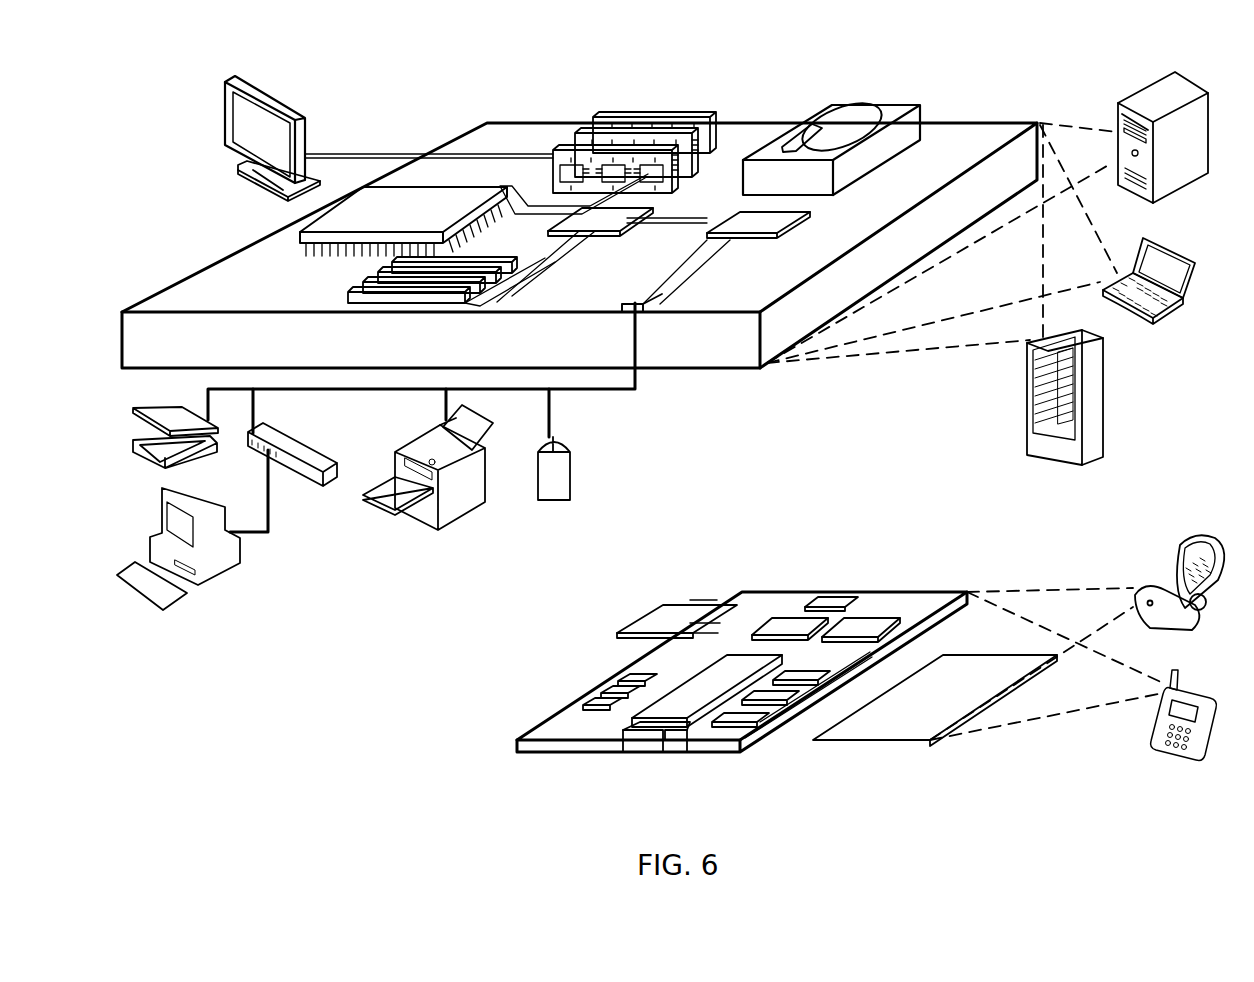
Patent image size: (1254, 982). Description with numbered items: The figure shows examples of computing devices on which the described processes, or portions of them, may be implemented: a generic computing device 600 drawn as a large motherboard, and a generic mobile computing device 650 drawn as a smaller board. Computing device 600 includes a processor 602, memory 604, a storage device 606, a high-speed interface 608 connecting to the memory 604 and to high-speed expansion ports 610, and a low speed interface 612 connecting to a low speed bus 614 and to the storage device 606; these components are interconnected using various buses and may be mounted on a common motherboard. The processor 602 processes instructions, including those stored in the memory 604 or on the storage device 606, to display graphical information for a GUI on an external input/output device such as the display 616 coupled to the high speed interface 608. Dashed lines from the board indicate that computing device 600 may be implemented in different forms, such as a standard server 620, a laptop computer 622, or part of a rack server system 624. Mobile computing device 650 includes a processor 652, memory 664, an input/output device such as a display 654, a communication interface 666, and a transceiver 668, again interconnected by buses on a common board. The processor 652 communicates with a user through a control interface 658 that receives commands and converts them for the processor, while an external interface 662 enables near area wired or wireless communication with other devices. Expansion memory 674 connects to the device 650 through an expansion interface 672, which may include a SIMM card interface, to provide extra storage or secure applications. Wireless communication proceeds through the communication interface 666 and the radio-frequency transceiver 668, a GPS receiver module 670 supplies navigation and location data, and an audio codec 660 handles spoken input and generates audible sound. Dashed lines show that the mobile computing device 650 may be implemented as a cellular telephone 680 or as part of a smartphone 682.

The computing device 600 is at (420, 100).
The processor 602 is at (298, 240).
The memory 604 is at (612, 117).
The storage device 606 is at (830, 108).
The high-speed interface 608 is at (578, 224).
The high-speed expansion ports 610 is at (365, 280).
The low speed interface 612 is at (757, 224).
The low speed bus 614 is at (640, 306).
The display 616 is at (225, 82).
The standard server 620 is at (1117, 106).
The laptop computer 622 is at (1143, 236).
The rack server system 624 is at (1027, 420).
The mobile computing device 650 is at (722, 570).
The processor 652 is at (678, 722).
The display 654 is at (930, 742).
The control interface 658 is at (802, 684).
The audio codec 660 is at (808, 679).
The external interface 662 is at (647, 742).
The memory 664 is at (600, 703).
The communication interface 666 is at (790, 625).
The transceiver 668 is at (860, 625).
The GPS receiver module 670 is at (828, 595).
The expansion interface 672 is at (717, 602).
The expansion memory 674 is at (663, 604).
The cellular telephone 680 is at (1191, 535).
The smartphone 682 is at (1168, 670).